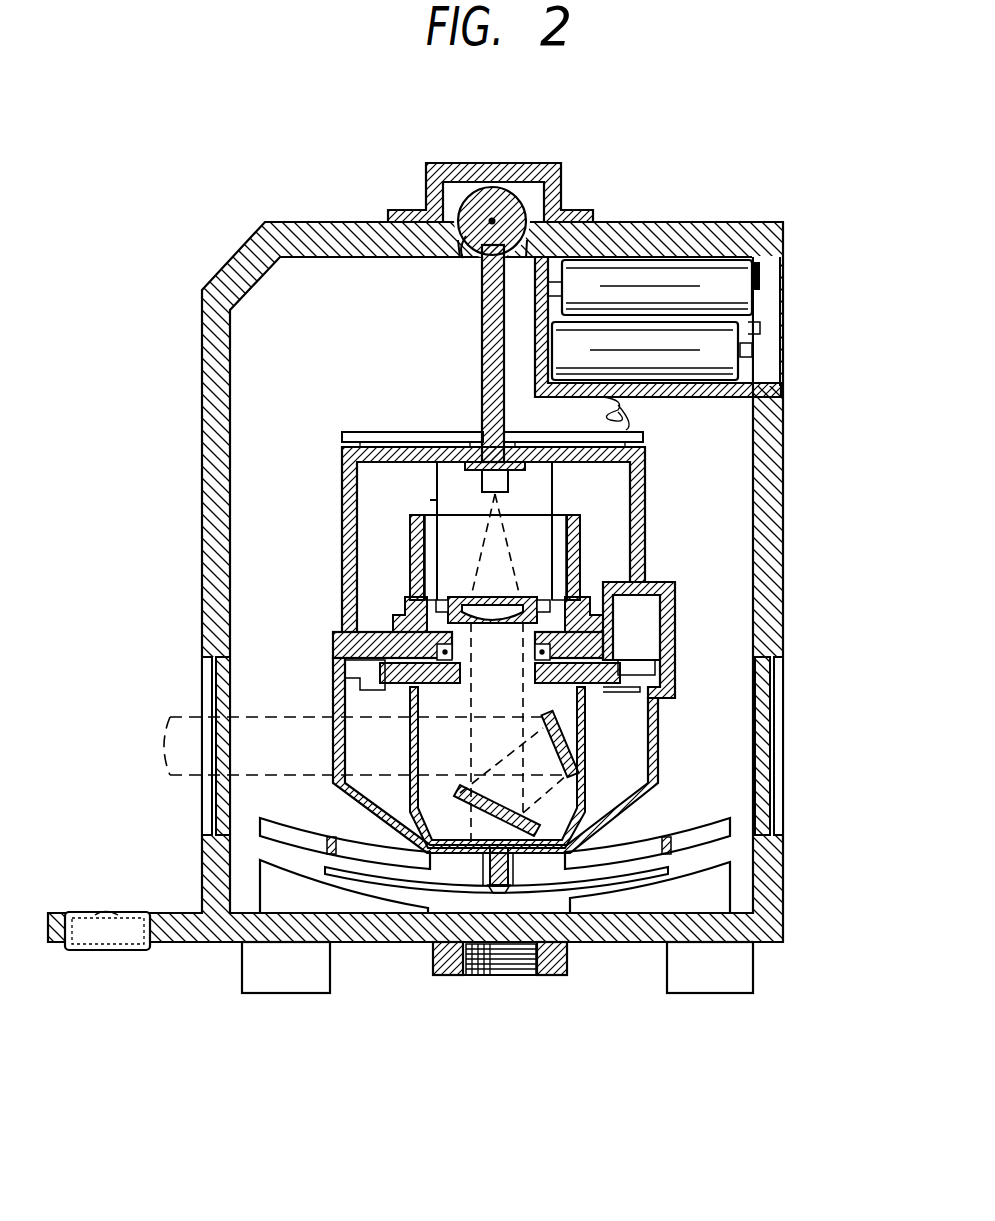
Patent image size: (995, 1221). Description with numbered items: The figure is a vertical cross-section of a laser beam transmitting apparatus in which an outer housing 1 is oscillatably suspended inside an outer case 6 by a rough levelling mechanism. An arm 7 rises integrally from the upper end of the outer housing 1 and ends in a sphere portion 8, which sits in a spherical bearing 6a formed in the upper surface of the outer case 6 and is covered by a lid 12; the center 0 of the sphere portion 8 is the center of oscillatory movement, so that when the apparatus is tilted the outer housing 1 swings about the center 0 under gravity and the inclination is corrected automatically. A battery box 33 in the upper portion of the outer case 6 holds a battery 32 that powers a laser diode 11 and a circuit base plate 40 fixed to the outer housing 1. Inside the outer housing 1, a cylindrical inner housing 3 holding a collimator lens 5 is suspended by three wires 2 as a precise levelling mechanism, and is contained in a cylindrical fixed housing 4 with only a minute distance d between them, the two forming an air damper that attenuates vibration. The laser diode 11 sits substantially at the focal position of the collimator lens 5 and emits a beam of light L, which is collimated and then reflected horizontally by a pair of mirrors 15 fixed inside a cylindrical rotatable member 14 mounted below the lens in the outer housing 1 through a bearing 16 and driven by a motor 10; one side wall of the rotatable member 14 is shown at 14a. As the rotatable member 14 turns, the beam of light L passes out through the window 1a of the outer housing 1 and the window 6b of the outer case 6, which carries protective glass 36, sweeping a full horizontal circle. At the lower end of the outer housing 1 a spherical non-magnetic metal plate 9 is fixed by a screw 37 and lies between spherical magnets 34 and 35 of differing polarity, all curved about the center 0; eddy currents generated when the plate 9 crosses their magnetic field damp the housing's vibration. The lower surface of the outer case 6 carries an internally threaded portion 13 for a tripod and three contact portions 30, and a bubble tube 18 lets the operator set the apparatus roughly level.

The outer case 6 is at (202, 415).
The spherical bearing 6a is at (468, 252).
The window 6b is at (212, 668).
The protective glass 36 is at (222, 695).
The lid 12 is at (437, 163).
The arm 7 is at (483, 346).
The sphere portion 8 is at (505, 206).
The center of the sphere portion 0 is at (492, 218).
The battery 32 is at (748, 292).
The battery box 33 is at (747, 329).
The circuit base plate 40 is at (372, 432).
The outer housing 1 is at (342, 487).
The laser diode 11 is at (482, 465).
The wires 2 is at (436, 480).
The inner housing 3 is at (570, 518).
The fixed housing 4 is at (580, 537).
The minute distance d is at (430, 500).
The collimator lens 5 is at (490, 600).
The window 1a is at (333, 730).
The motor 10 is at (640, 636).
The bearing 16 is at (622, 640).
The rotatable member 14 is at (586, 706).
The cup side wall 14a is at (410, 722).
The mirrors 15 is at (562, 746).
The beam of light L is at (282, 776).
The non-magnetic metal plate 9 is at (550, 942).
The magnet 34 is at (718, 824).
The magnet 35 is at (712, 890).
The bubble tube 18 is at (82, 912).
The contact portions 30 is at (272, 985).
The internally threaded portion 13 is at (510, 955).
The screw 37 is at (496, 952).